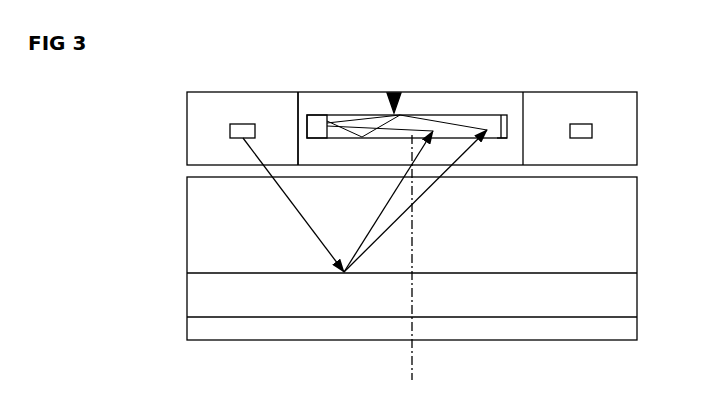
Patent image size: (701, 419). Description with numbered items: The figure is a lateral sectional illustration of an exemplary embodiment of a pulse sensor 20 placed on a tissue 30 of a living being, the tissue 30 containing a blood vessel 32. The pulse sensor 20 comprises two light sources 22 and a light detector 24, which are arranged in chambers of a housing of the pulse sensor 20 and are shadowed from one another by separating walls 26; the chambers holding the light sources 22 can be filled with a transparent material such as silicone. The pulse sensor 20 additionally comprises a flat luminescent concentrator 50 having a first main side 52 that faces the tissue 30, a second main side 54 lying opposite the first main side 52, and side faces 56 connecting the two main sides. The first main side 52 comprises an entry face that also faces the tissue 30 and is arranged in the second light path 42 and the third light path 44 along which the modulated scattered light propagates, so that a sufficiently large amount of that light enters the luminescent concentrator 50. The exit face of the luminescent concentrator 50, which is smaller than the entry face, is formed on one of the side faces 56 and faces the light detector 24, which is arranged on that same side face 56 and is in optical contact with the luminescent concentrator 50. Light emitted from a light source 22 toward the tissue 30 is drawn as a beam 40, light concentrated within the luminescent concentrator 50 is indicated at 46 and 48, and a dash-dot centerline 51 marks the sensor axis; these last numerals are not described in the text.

The pulse sensor 20 is at (168, 128).
The light source 22 is at (232, 124).
The light detector 24 is at (299, 126).
The separating wall 26 is at (290, 140).
The tissue 30 is at (168, 228).
The blood vessel 32 is at (237, 310).
The incident light beam 40 is at (293, 208).
The second light path 42 is at (378, 218).
The third light path 44 is at (429, 191).
The light guide 46 is at (463, 115).
The guided light 48 is at (418, 117).
The luminescent concentrator 50 is at (394, 93).
The optical axis 51 is at (418, 362).
The first main side 52 is at (498, 140).
The second main side 54 is at (345, 115).
The side face 56 is at (324, 115).